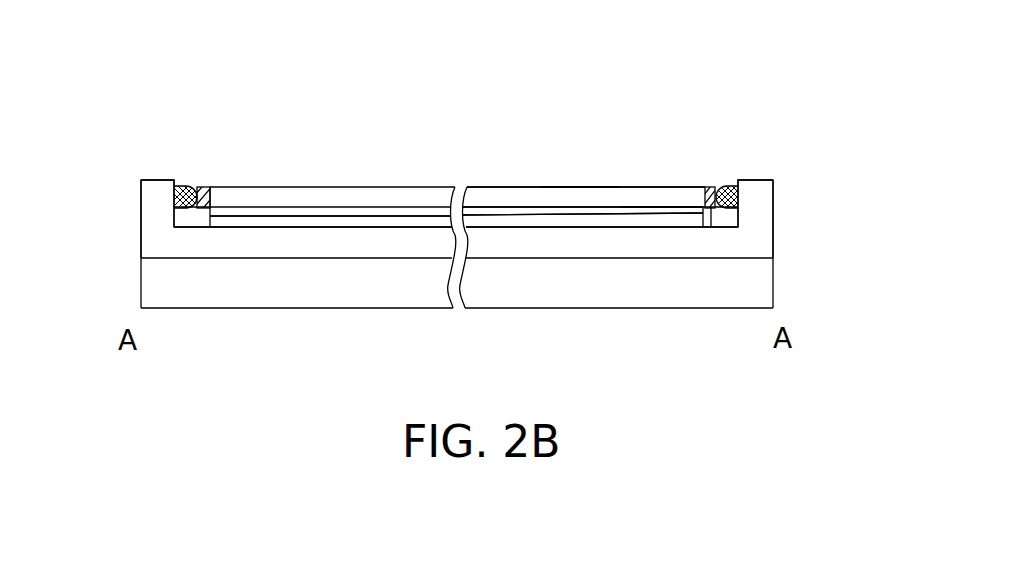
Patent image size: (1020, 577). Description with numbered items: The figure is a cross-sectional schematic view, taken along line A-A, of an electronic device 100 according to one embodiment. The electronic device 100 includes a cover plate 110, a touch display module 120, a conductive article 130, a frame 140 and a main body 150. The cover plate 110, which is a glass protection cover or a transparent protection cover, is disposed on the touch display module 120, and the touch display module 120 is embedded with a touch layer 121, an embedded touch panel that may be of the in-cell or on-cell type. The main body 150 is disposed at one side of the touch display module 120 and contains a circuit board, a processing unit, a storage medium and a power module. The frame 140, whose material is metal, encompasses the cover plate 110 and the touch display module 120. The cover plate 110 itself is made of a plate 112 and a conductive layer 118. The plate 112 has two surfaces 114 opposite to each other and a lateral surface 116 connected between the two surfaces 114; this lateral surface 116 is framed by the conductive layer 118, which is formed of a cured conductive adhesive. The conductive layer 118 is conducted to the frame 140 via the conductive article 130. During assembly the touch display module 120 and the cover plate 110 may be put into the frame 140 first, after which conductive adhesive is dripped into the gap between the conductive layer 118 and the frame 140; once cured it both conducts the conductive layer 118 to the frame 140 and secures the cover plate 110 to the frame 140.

The electronic device 100 is at (152, 127).
The cover plate 110 is at (747, 111).
The plate 112 is at (523, 195).
The surfaces 114 is at (576, 205).
The lateral surface 116 is at (697, 202).
The conductive layer 118 is at (707, 186).
The touch display module 120 is at (712, 218).
The touch layer 121 is at (700, 213).
The conductive article 130 is at (727, 185).
The frame 140 is at (773, 190).
The main body 150 is at (758, 285).